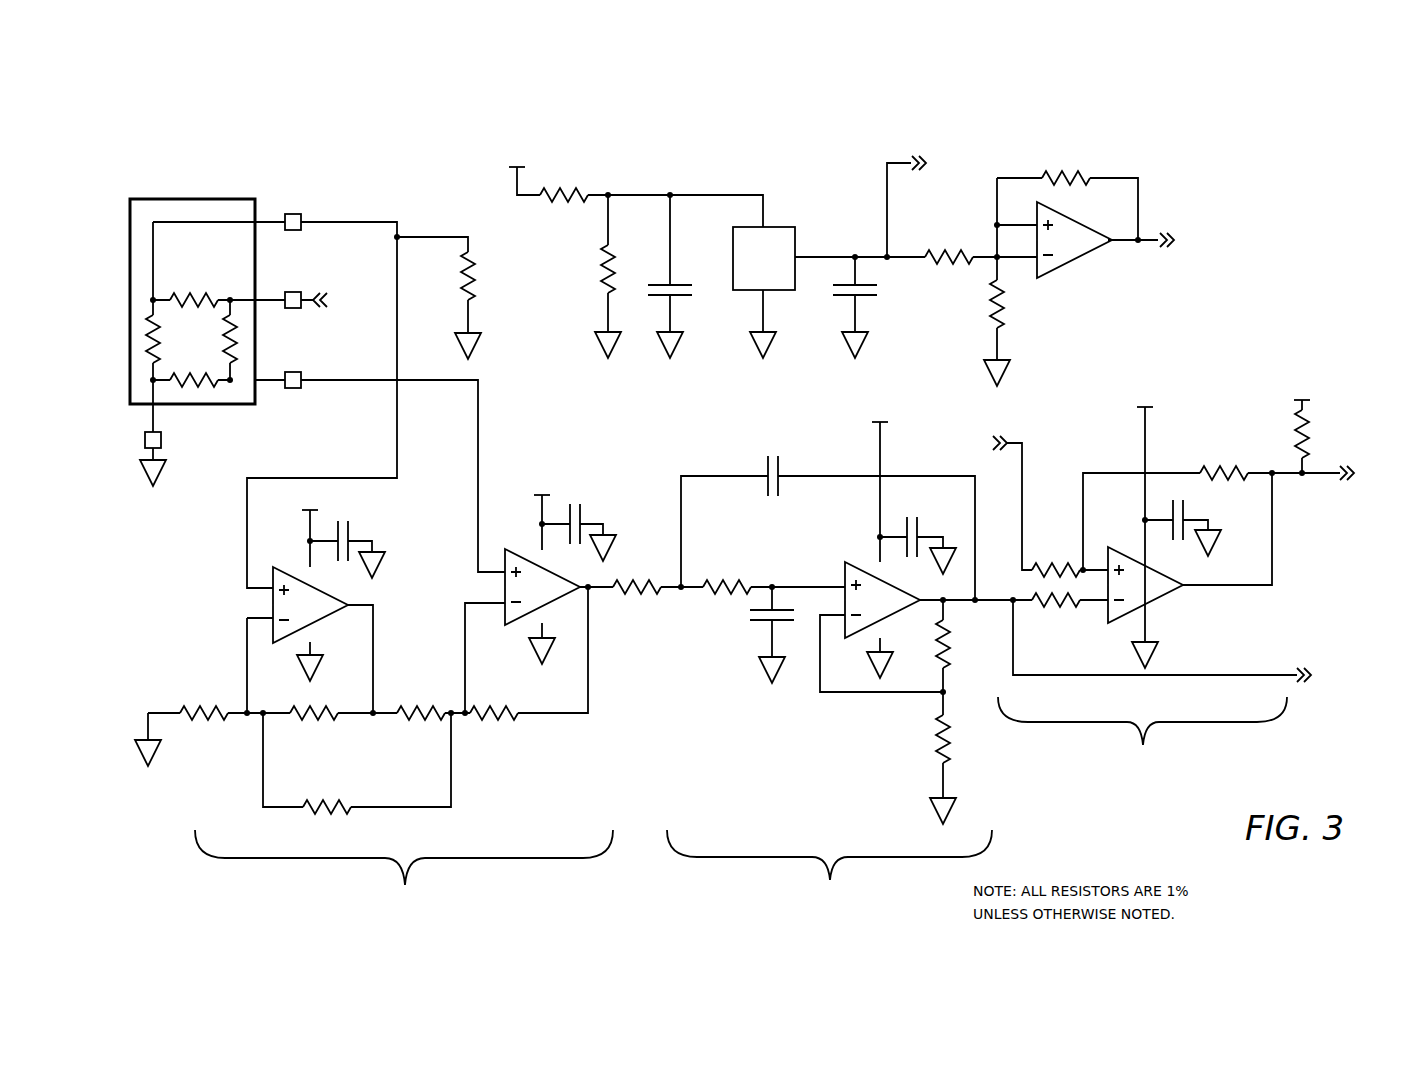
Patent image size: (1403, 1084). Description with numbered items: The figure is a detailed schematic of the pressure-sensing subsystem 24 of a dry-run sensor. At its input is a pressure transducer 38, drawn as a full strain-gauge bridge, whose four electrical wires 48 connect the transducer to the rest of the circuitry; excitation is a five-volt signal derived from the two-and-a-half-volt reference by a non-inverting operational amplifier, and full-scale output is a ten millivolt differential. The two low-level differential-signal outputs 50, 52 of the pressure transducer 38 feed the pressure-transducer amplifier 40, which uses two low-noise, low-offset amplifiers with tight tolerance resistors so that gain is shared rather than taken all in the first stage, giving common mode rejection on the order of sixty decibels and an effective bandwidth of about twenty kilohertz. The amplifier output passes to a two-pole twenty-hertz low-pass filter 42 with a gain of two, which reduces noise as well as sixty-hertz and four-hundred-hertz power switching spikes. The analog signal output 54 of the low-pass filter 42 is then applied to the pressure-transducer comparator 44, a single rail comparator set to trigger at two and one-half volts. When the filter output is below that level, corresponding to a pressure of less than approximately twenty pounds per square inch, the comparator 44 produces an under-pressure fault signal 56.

The pressure-sensing subsystem 24 is at (1280, 265).
The pressure transducer 38 is at (197, 199).
The pressure-transducer amplifier 40 is at (380, 699).
The 20 Hz low-pass filter 42 is at (846, 656).
The pressure-transducer comparator 44 is at (1146, 573).
The electrical wires 48 is at (291, 212).
The differential-signal output 50 is at (397, 410).
The differential-signal output 52 is at (478, 410).
The analog signal output 54 is at (1010, 597).
The under-pressure fault signal 56 is at (1328, 478).